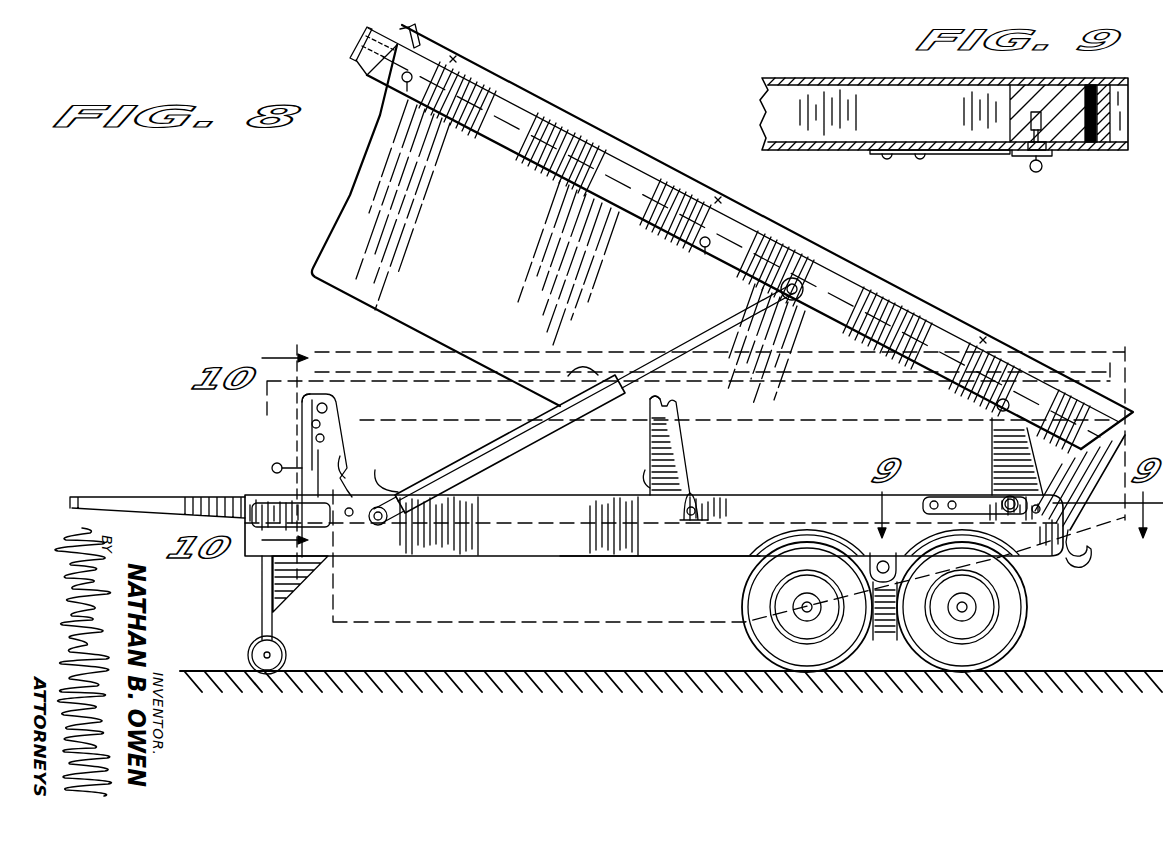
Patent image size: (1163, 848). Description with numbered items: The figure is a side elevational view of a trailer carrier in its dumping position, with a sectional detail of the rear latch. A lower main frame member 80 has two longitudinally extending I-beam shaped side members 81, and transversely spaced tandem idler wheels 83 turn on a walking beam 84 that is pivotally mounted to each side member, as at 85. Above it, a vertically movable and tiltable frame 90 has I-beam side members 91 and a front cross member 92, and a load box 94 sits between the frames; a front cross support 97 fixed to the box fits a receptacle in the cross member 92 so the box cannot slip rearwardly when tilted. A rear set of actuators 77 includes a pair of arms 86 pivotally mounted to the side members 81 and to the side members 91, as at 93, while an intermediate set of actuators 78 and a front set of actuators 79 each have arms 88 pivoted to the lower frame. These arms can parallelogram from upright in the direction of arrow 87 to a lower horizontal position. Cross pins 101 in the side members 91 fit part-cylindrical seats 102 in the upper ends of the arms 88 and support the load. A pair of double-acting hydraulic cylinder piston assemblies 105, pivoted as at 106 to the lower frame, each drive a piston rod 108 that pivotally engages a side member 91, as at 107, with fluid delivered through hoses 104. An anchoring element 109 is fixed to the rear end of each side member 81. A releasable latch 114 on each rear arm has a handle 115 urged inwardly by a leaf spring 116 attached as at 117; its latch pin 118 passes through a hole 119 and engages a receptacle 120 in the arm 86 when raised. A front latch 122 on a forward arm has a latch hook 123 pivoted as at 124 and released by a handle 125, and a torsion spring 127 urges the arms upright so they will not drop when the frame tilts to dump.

In FIG. 8, the rear set of actuators 77 is at (993, 443).
In FIG. 8, the intermediate set of actuators 78 is at (692, 433).
In FIG. 8, the front set of actuators 79 is at (355, 487).
In FIG. 8, the lower main frame member 80 is at (522, 558).
In FIG. 8, the side members 81 is at (645, 558).
In FIG. 8, the tandem idler wheels 83 is at (750, 648).
In FIG. 8, the walking beam 84 is at (884, 634).
In FIG. 8, the pivot mounting of walking beam 85 is at (875, 568).
In FIG. 8, the arms 86 is at (1005, 460).
In FIG. 8, the arrow 87 is at (398, 418).
In FIG. 8, the arms 88 is at (345, 462).
In FIG. 8, the vertically movable and tiltable frame 90 is at (578, 210).
In FIG. 8, the side members 91 is at (490, 130).
In FIG. 8, the front cross member 92 is at (350, 47).
In FIG. 8, the pivot mounting of rear arms 93 is at (1000, 400).
In FIG. 8, the load box 94 is at (598, 125).
In FIG. 8, the front cross support 97 is at (418, 28).
In FIG. 8, the cross pins 101 is at (411, 80).
In FIG. 8, the part-cylindrical seat 102 is at (337, 403).
In FIG. 8, the hoses 104 is at (588, 365).
In FIG. 8, the double-acting hydraulic cylinder piston assemblies 105 is at (492, 462).
In FIG. 8, the pivot mounting of hydraulic cylinder 106 is at (381, 526).
In FIG. 8, the pivot engagement of piston rod 107 is at (802, 294).
In FIG. 8, the piston rod 108 is at (686, 348).
In FIG. 8, the anchoring element 109 is at (1074, 560).
In FIG. 8, the releasable latch 114 is at (995, 520).
In FIG. 9, the releasable latch 114 is at (999, 166).
In FIG. 9, the handle 115 is at (1043, 170).
In FIG. 9, the leaf spring 116 is at (960, 156).
In FIG. 9, the attachment of leaf spring 117 is at (892, 158).
In FIG. 9, the latch pin 118 is at (1050, 147).
In FIG. 9, the hole 119 is at (1016, 158).
In FIG. 9, the receptacle 120 is at (1012, 117).
In FIG. 8, the front latch 122 is at (296, 442).
In FIG. 8, the latch hook 123 is at (320, 398).
In FIG. 8, the pivot mounting of latch hook 124 is at (345, 410).
In FIG. 8, the handle 125 is at (275, 473).
In FIG. 8, the torsion spring 127 is at (695, 500).